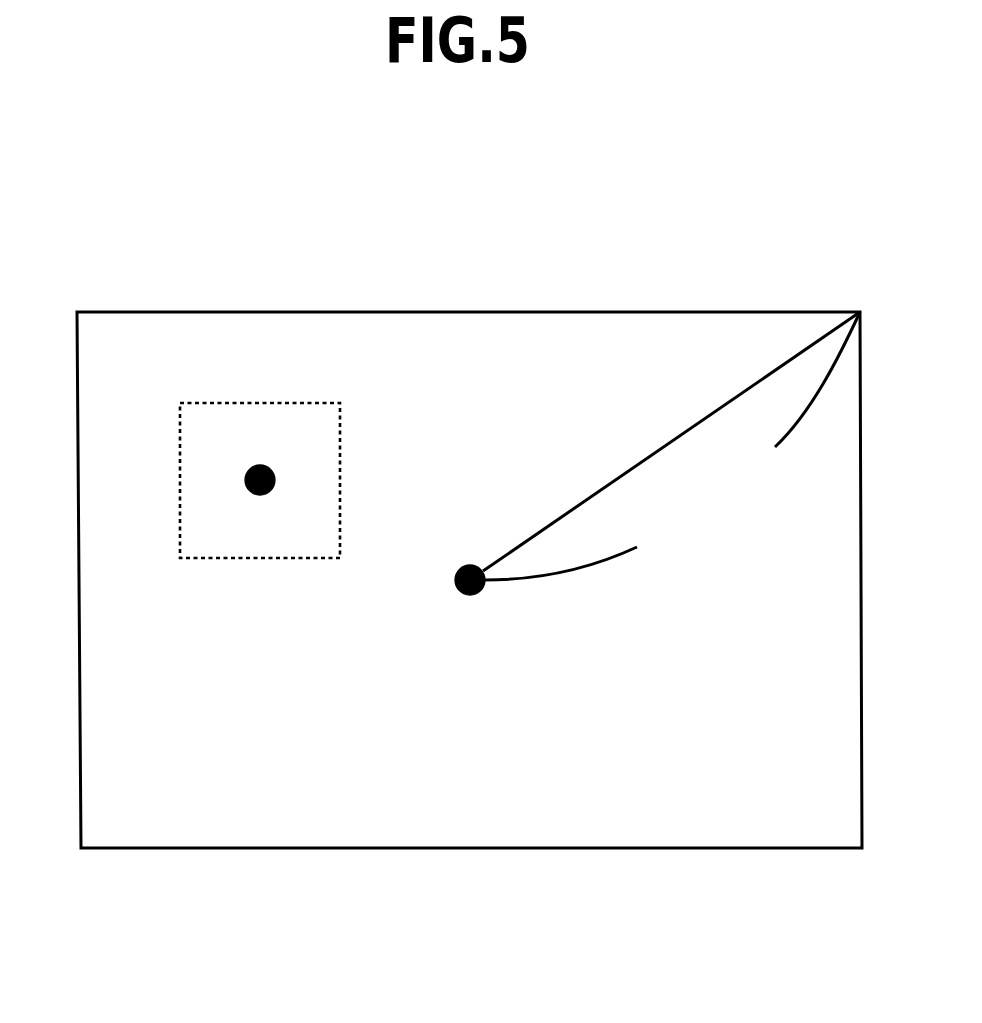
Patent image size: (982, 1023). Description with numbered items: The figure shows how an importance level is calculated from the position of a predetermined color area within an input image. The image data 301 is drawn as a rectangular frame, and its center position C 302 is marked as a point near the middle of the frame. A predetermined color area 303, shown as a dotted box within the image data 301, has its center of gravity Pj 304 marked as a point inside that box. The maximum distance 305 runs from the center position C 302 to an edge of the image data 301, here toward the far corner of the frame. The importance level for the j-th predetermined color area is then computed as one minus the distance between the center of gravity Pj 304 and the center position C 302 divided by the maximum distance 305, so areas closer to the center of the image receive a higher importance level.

The image data 301 is at (168, 312).
The center position C 302 is at (458, 591).
The predetermined color area 303 is at (192, 558).
The center of gravity Pj 304 is at (246, 482).
The maximum distance Pmax 305 is at (738, 523).